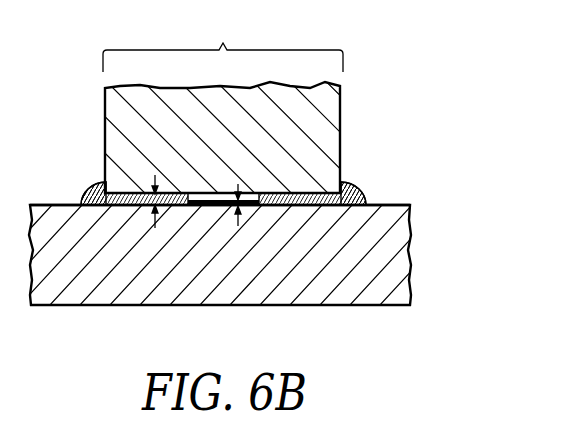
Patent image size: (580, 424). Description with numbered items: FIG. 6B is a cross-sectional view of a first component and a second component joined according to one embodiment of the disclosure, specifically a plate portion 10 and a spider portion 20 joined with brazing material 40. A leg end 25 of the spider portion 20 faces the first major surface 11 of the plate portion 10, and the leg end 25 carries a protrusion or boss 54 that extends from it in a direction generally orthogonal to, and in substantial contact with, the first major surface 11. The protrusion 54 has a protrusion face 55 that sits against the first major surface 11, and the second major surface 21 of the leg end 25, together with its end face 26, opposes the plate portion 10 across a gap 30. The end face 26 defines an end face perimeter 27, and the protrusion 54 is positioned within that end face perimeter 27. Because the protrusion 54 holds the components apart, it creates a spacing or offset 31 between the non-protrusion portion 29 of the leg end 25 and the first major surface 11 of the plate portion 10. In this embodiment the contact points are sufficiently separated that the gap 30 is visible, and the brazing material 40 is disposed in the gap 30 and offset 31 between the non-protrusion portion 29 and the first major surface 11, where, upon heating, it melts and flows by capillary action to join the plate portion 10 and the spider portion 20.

The plate portion 10 is at (392, 248).
The first major surface 11 is at (388, 204).
The spider portion 20 is at (238, 140).
The leg end 25 is at (328, 131).
The second major surface 21 is at (208, 269).
The end face 26 is at (208, 269).
The non-protrusion portion of the leg end 29 is at (121, 205).
The protrusion face 55 is at (215, 205).
The end face perimeter 27 is at (223, 43).
The gap 30 is at (238, 184).
The offset 31 is at (156, 176).
The brazing material 40 is at (97, 188).
The protrusion or boss 54 is at (203, 193).